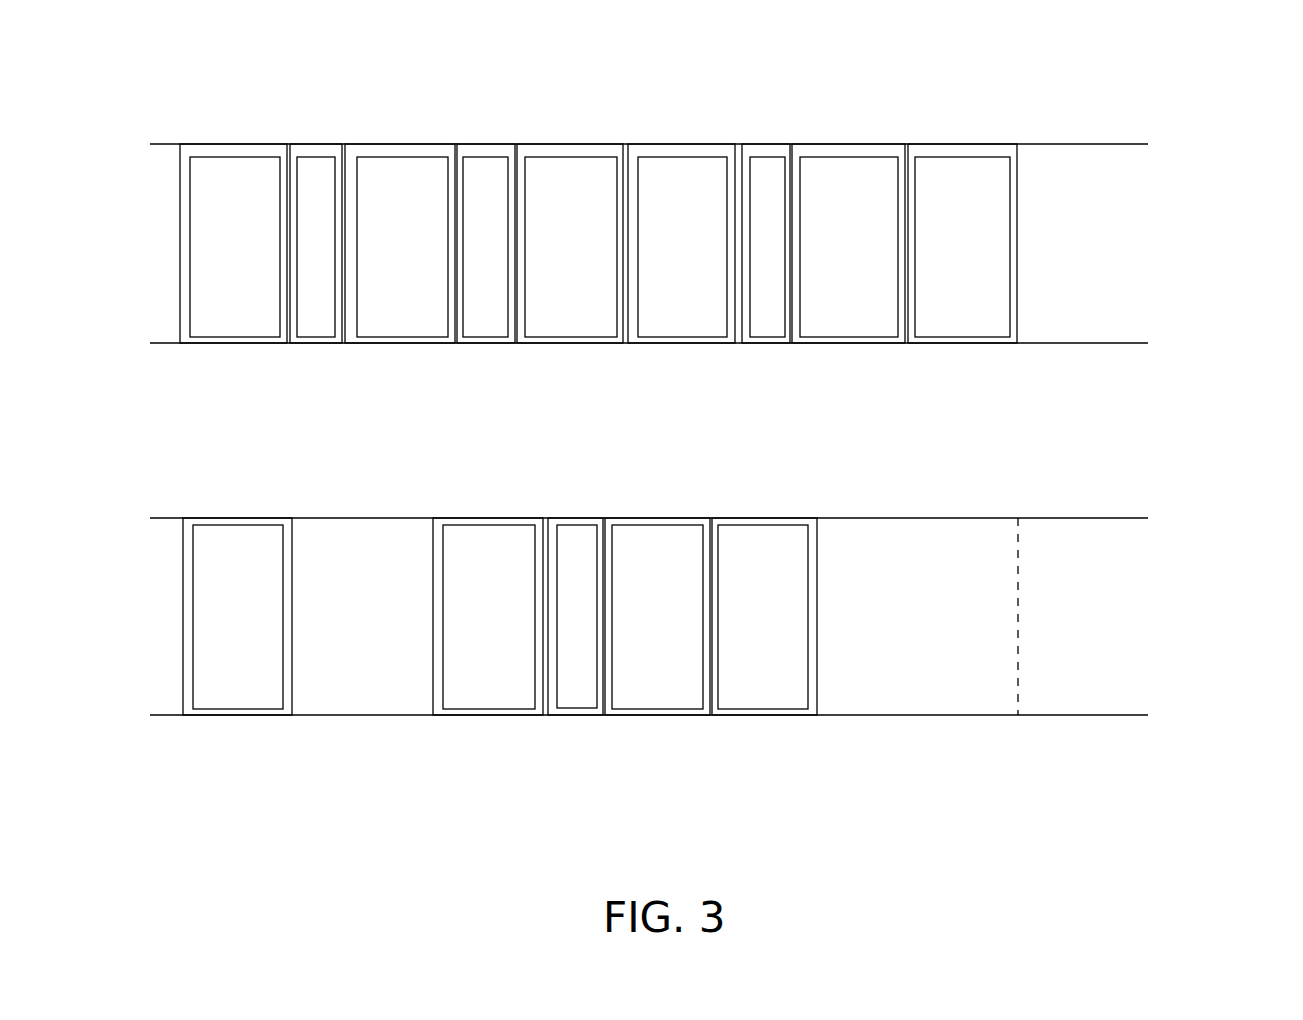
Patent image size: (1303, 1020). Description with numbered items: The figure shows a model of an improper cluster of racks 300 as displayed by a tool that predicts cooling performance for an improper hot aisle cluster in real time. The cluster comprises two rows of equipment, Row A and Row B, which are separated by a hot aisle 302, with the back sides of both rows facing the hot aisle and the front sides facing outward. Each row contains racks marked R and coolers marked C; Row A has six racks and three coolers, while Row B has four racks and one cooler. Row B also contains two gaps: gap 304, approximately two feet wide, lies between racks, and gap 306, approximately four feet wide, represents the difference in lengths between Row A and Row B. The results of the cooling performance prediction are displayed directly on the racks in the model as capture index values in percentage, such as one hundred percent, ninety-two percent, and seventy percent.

The improper cluster of racks 300 is at (1050, 118).
The hot aisle 302 is at (1072, 432).
The gap 304 is at (360, 683).
The gap 306 is at (918, 680).